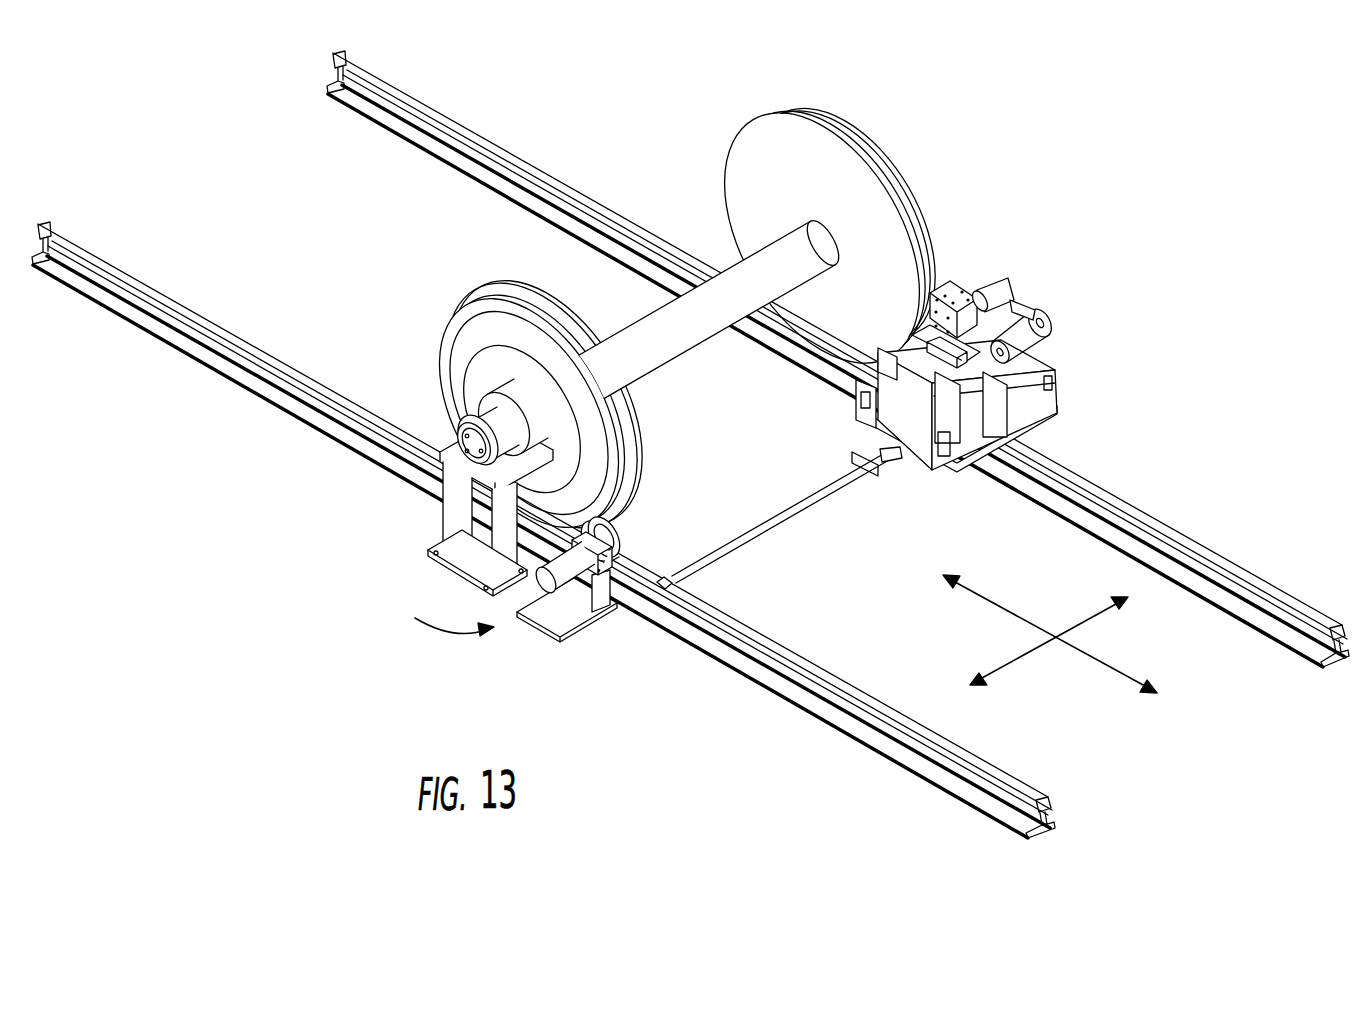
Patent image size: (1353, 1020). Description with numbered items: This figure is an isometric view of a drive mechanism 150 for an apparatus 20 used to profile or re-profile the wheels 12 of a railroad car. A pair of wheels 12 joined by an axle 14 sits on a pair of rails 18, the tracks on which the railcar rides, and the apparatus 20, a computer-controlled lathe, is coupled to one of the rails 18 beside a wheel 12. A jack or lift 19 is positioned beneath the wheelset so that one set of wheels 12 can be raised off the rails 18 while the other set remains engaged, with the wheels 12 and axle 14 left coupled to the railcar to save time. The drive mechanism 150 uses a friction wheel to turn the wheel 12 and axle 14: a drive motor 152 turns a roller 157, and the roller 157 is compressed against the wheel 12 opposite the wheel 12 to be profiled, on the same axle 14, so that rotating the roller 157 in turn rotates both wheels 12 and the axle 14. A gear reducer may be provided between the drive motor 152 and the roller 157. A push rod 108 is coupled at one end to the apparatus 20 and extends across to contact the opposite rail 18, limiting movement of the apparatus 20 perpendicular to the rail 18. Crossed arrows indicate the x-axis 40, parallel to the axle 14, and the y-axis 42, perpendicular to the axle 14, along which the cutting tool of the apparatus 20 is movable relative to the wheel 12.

The wheel 12 is at (927, 265).
The axle 14 is at (655, 330).
The rail 18 is at (495, 150).
The jack or lift 19 is at (400, 540).
The apparatus 20 is at (1069, 288).
The x-axis 40 is at (1018, 618).
The y-axis 42 is at (1030, 648).
The push rod 108 is at (798, 510).
The drive mechanism 150 is at (435, 619).
The drive motor 152 is at (567, 567).
The roller 157 is at (617, 538).